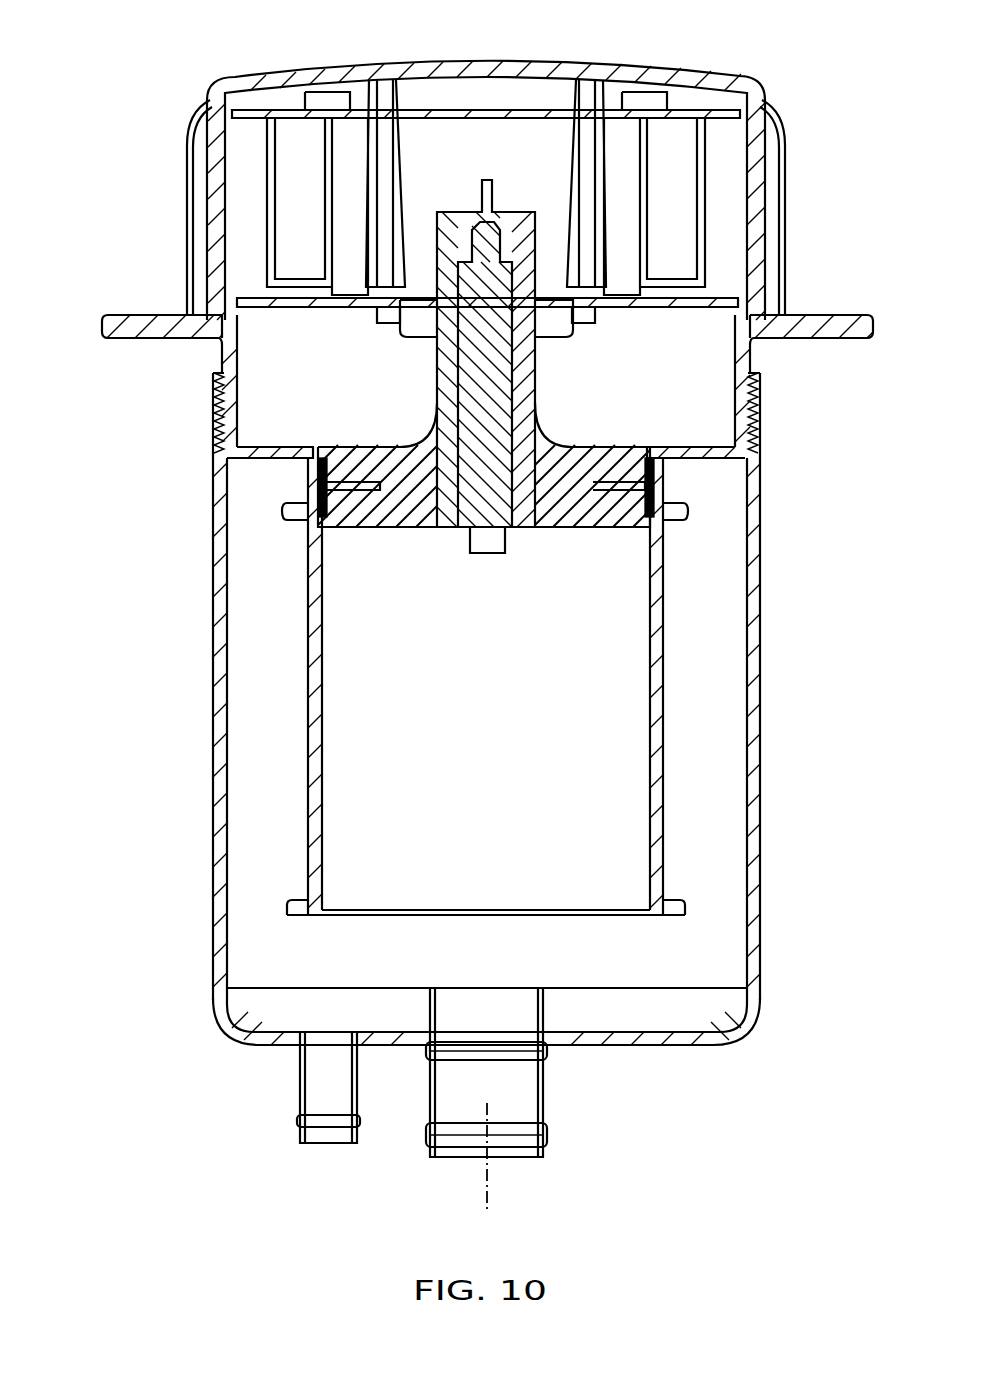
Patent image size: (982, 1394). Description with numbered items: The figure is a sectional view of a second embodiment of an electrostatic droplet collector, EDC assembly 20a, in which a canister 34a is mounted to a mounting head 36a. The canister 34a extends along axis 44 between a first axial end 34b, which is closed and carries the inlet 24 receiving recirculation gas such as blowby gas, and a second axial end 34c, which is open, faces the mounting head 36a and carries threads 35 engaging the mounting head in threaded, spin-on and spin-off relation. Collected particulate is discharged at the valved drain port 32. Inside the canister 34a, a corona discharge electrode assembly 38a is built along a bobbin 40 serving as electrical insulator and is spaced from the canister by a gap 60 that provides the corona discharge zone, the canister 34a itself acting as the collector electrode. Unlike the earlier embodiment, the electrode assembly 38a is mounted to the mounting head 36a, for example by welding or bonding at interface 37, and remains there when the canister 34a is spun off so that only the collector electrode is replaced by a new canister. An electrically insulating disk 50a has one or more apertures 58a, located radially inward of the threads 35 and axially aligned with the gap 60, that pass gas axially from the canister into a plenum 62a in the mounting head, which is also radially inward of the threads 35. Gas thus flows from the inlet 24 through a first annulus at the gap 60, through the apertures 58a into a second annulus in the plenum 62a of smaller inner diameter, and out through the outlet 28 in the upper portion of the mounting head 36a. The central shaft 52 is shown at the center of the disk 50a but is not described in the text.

The EDC assembly 20a is at (148, 490).
The outlet 28 is at (552, 70).
The mounting head 36a is at (213, 150).
The second axial end 34c is at (760, 372).
The plenum 62a is at (367, 365).
The threads 35 is at (755, 412).
The interface 37 is at (243, 453).
The canister 34a is at (212, 660).
The first axial end 34b is at (737, 1035).
The gap 60 is at (260, 740).
The electrically insulating disk 50a is at (403, 515).
The apertures 58a is at (296, 453).
The central shaft 52 is at (500, 383).
The corona discharge electrode assembly 38a is at (268, 540).
The bobbin 40 is at (313, 711).
The valved drain port 32 is at (300, 1092).
The inlet 24 is at (543, 1098).
The axis 44 is at (485, 1190).